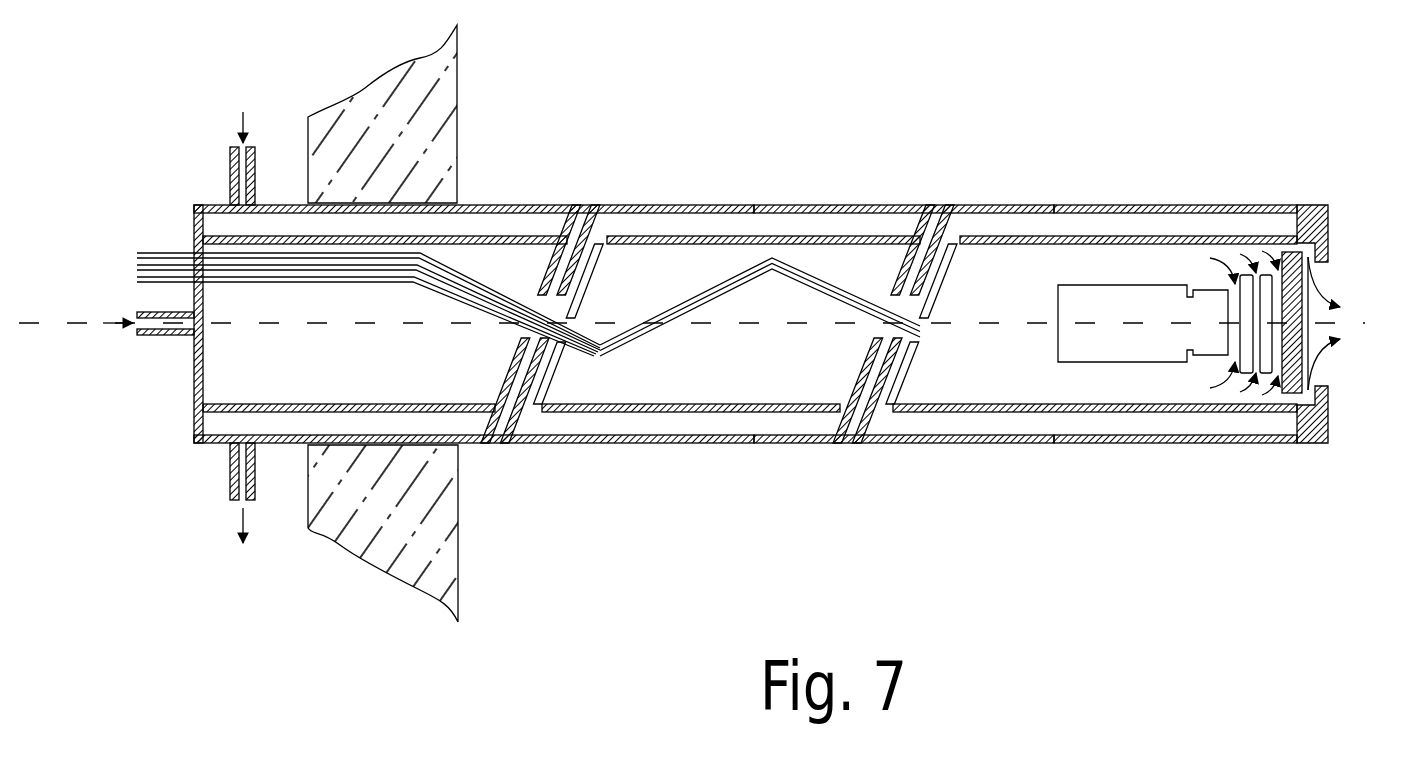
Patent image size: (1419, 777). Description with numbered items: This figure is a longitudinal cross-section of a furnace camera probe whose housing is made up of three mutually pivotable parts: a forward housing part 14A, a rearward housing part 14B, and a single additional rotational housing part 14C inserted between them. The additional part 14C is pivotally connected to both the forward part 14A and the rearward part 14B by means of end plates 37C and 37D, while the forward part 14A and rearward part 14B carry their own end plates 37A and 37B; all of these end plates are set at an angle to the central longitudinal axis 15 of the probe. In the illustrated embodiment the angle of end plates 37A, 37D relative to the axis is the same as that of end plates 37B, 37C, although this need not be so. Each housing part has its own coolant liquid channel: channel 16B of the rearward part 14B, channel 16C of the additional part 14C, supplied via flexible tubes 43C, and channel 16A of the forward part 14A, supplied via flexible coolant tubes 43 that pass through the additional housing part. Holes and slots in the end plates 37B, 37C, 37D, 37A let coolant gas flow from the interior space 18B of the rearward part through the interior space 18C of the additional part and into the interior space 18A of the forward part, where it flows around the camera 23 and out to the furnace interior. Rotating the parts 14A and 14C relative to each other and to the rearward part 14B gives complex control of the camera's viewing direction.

The forward housing part 14A is at (998, 203).
The rearward housing part 14B is at (706, 203).
The additional rotational housing part 14C is at (484, 202).
The central longitudinal axis 15 is at (1360, 318).
The coolant liquid channel 16A is at (318, 415).
The coolant channel 16B is at (1140, 420).
The channel for coolant liquid 16C is at (731, 324).
The interior space 18A is at (1034, 379).
The interior space 18B is at (397, 382).
The chamber 18C is at (756, 379).
The camera 23 is at (1151, 351).
The end plate 37A is at (520, 366).
The end plate 37B is at (873, 413).
The end plate 37C is at (522, 413).
The end plate 37D is at (873, 360).
The flexible coolant tubes 43 is at (947, 290).
The flexible tubes 43C is at (594, 292).